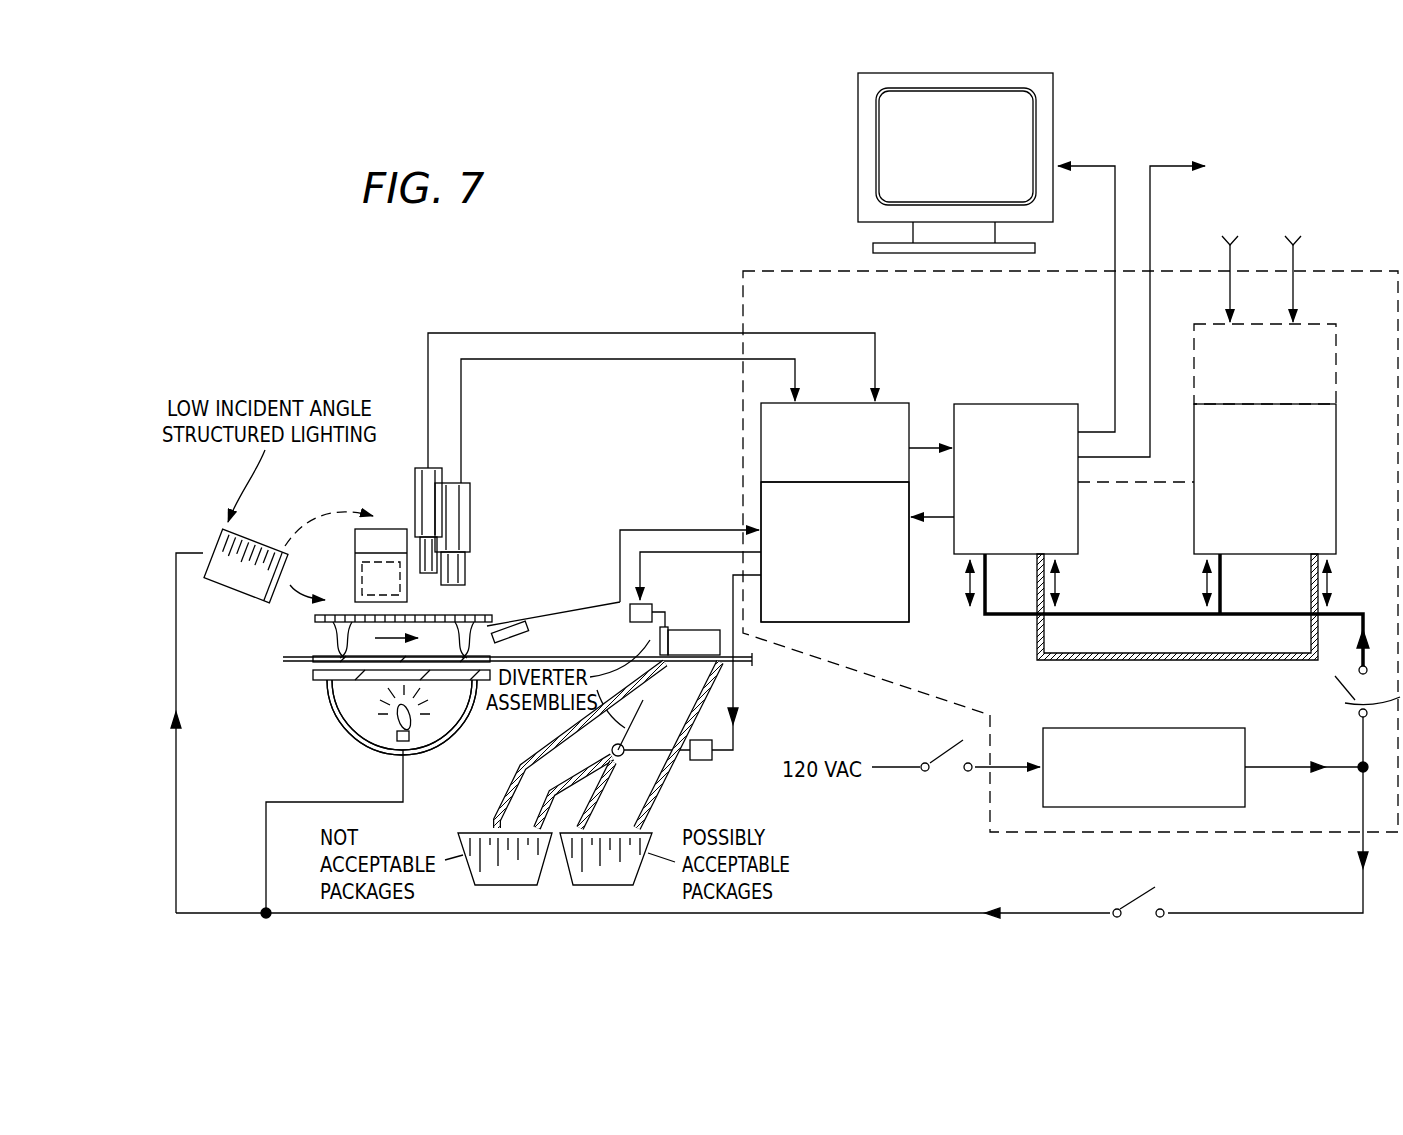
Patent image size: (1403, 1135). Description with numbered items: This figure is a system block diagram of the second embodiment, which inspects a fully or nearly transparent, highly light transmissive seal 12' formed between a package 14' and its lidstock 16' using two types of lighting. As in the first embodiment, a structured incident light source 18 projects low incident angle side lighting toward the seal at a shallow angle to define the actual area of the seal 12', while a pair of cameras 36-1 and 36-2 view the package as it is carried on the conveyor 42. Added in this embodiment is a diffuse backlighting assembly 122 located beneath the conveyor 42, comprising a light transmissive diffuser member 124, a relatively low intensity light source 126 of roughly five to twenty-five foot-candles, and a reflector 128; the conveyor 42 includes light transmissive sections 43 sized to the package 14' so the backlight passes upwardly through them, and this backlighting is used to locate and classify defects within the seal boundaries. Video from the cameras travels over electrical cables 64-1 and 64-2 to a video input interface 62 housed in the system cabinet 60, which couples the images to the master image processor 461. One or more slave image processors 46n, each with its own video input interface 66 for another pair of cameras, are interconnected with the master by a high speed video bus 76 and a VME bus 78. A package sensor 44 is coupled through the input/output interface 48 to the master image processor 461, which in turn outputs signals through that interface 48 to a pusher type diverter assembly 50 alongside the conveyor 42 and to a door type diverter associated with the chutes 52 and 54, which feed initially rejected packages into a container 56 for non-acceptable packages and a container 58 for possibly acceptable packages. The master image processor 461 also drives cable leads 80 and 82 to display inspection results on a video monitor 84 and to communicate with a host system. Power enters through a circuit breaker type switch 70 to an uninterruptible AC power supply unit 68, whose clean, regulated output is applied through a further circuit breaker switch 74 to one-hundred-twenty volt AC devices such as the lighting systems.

The video monitor 84 is at (858, 172).
The cable lead 80 is at (1098, 165).
The cable lead 82 is at (1152, 218).
The system cabinet 60 is at (742, 303).
The video input interface 62 is at (895, 413).
The input/output interface 48 is at (866, 622).
The electrical cable 64-1 is at (540, 333).
The electrical cable 64-2 is at (545, 359).
The master image processor 461 is at (1078, 514).
The slave image processor 46n is at (1337, 498).
The video input interface 66 is at (1337, 358).
The bus 78 is at (1098, 614).
The high speed video bus 76 is at (1215, 661).
The uninterruptible AC power supply unit 68 is at (1103, 728).
The circuit breaker type switch 70 is at (945, 752).
The circuit breaker switch 74 is at (1140, 900).
The structured incident light source 18 is at (218, 588).
The camera 36-1 is at (443, 474).
The camera 36-2 is at (470, 522).
The lidstock 16' is at (403, 606).
The seal 12' is at (420, 609).
The package 14' is at (343, 637).
The conveyor 42 is at (300, 664).
The light transmissive section 43 is at (455, 672).
The backlighting assembly 122 is at (345, 742).
The reflector 128 is at (463, 725).
The light source 126 is at (348, 683).
The light transmissive diffuser member 124 is at (413, 723).
The package sensor 44 is at (519, 641).
The pusher type diverter assembly 50 is at (678, 616).
The chute 52 is at (522, 763).
The chute 54 is at (640, 772).
The container 56 is at (523, 877).
The container 58 is at (610, 877).